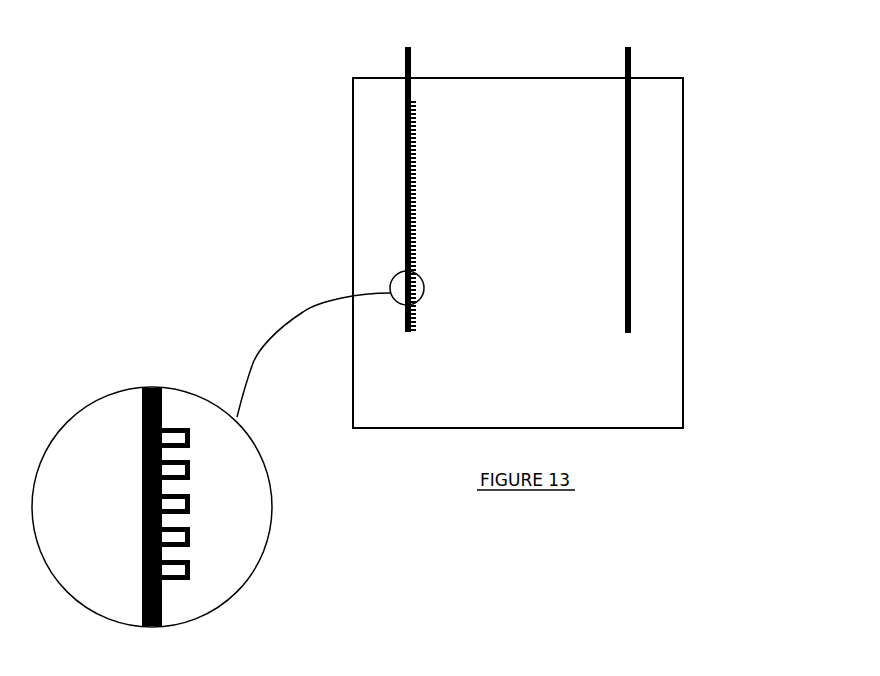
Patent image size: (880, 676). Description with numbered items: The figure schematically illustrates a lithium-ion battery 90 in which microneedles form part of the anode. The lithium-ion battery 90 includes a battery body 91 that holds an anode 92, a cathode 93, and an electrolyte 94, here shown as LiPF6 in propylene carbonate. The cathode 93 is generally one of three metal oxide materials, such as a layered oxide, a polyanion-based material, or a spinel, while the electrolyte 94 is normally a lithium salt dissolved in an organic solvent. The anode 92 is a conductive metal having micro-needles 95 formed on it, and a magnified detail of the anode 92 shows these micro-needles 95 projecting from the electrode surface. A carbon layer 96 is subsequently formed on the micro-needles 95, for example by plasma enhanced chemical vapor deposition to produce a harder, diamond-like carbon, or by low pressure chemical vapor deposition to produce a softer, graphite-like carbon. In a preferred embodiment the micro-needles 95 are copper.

The lithium-ion battery 90 is at (742, 160).
The battery body 91 is at (685, 283).
The anode 92 is at (413, 63).
The cathode 93 is at (633, 63).
The electrolyte 94 is at (497, 385).
The micro-needles 95 is at (164, 439).
The carbon layer 96 is at (167, 487).